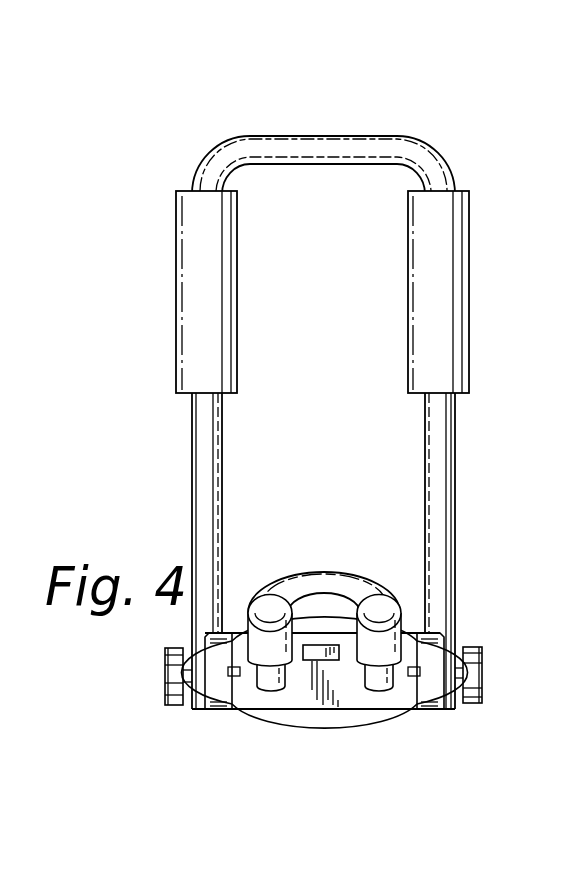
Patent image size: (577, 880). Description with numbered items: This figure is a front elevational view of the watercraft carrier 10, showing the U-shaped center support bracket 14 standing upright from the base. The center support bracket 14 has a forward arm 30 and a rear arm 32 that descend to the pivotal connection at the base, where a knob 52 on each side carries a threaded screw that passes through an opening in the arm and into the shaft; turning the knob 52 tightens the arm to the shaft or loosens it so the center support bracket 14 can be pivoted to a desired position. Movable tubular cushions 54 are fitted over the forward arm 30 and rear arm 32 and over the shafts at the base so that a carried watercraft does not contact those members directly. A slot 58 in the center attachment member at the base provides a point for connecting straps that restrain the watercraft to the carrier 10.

The watercraft carrier 10 is at (313, 772).
The center support bracket 14 is at (320, 127).
The forward arm 30 is at (455, 470).
The rear arm 32 is at (192, 488).
The knob 52 is at (165, 673).
The movable tubular cushions 54 is at (176, 347).
The slots 58 is at (312, 658).